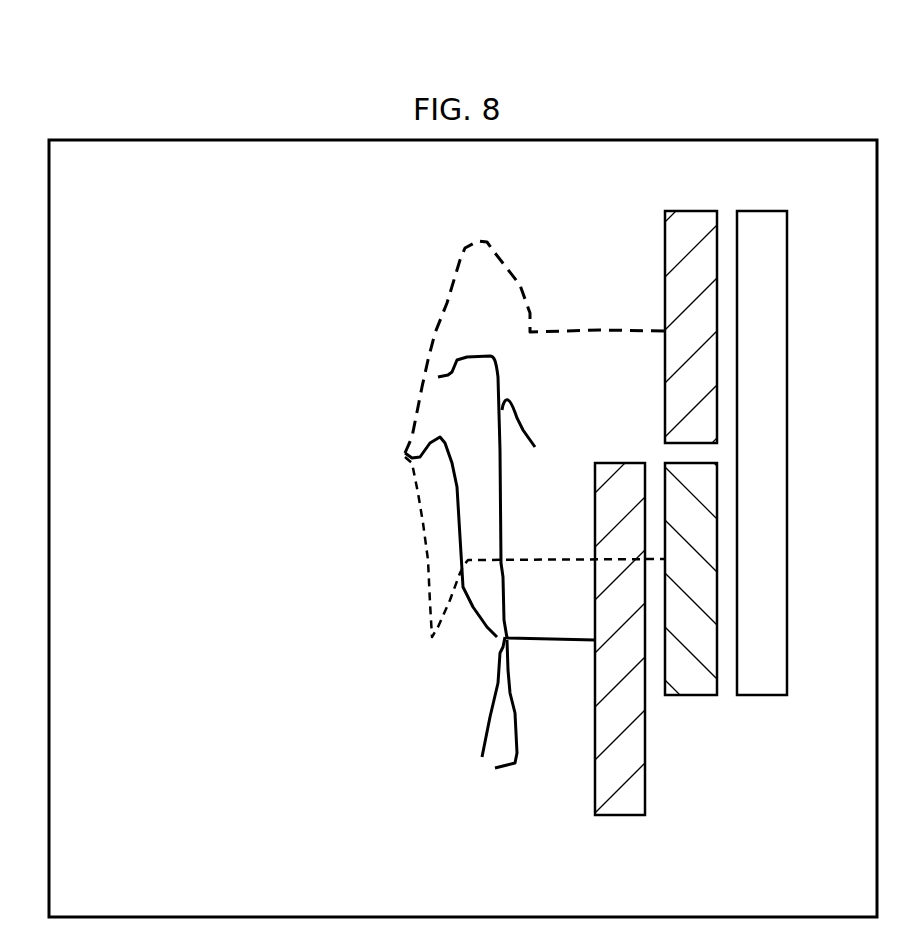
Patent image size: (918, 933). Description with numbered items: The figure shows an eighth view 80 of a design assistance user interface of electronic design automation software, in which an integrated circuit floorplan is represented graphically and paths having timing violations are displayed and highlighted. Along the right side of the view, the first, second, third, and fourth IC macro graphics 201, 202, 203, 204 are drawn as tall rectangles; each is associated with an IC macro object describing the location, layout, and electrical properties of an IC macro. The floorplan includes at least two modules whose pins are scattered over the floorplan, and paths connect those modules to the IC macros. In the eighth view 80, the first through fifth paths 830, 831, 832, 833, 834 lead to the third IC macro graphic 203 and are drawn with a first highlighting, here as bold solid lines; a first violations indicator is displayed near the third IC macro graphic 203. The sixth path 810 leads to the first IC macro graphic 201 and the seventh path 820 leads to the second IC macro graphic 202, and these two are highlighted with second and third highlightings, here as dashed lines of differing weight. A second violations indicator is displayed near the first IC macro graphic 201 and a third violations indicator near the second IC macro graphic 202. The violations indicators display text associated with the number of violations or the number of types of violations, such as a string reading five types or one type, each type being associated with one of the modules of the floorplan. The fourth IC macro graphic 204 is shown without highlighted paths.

The eighth view 80 is at (635, 60).
The first IC macro graphic 201 is at (692, 210).
The second IC macro graphic 202 is at (690, 697).
The third IC macro graphic 203 is at (620, 817).
The fourth IC macro graphic 204 is at (763, 210).
The sixth path 810 is at (430, 357).
The seventh path 820 is at (422, 520).
The first path 830 is at (457, 482).
The second path 831 is at (501, 378).
The third path 832 is at (523, 422).
The fourth path 833 is at (488, 713).
The fifth path 834 is at (500, 770).